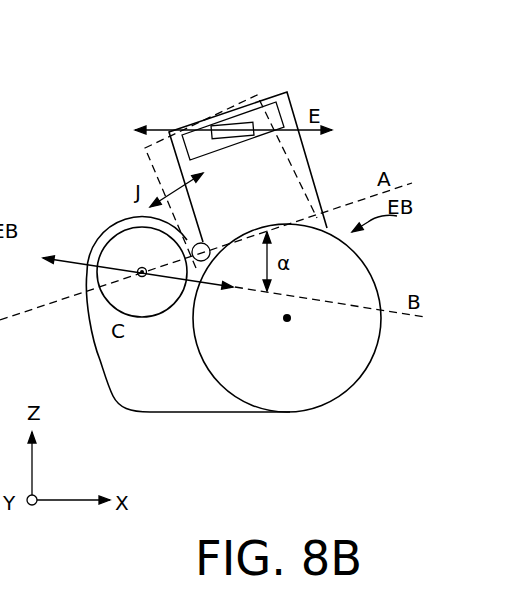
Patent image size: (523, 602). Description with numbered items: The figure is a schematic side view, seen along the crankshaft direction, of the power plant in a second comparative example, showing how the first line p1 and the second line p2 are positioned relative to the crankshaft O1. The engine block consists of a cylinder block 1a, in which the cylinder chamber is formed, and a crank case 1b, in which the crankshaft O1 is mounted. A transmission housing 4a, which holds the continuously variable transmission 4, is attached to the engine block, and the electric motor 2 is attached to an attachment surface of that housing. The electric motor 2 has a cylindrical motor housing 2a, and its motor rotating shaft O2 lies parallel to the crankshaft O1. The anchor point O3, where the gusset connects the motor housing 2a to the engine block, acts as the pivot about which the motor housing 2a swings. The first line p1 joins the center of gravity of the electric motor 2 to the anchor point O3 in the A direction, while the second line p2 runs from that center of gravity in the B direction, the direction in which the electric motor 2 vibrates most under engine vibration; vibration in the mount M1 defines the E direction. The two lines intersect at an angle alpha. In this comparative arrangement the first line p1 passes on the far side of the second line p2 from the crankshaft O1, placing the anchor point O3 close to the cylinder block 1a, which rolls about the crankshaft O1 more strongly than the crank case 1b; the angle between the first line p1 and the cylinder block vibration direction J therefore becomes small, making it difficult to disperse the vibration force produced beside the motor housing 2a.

The cylinder block 1a is at (306, 158).
The crank case 1b is at (360, 377).
The motor housing 2a is at (100, 305).
The transmission housing 4a is at (152, 380).
The mount M1 is at (231, 124).
The crankshaft O1 is at (287, 318).
The motor rotating shaft O2 is at (140, 270).
The anchor point O3 is at (193, 247).
The first line p1 is at (397, 187).
The second line p2 is at (401, 316).
The electric motor 2 is at (3, 256).
The continuously variable transmission 4 is at (2, 306).